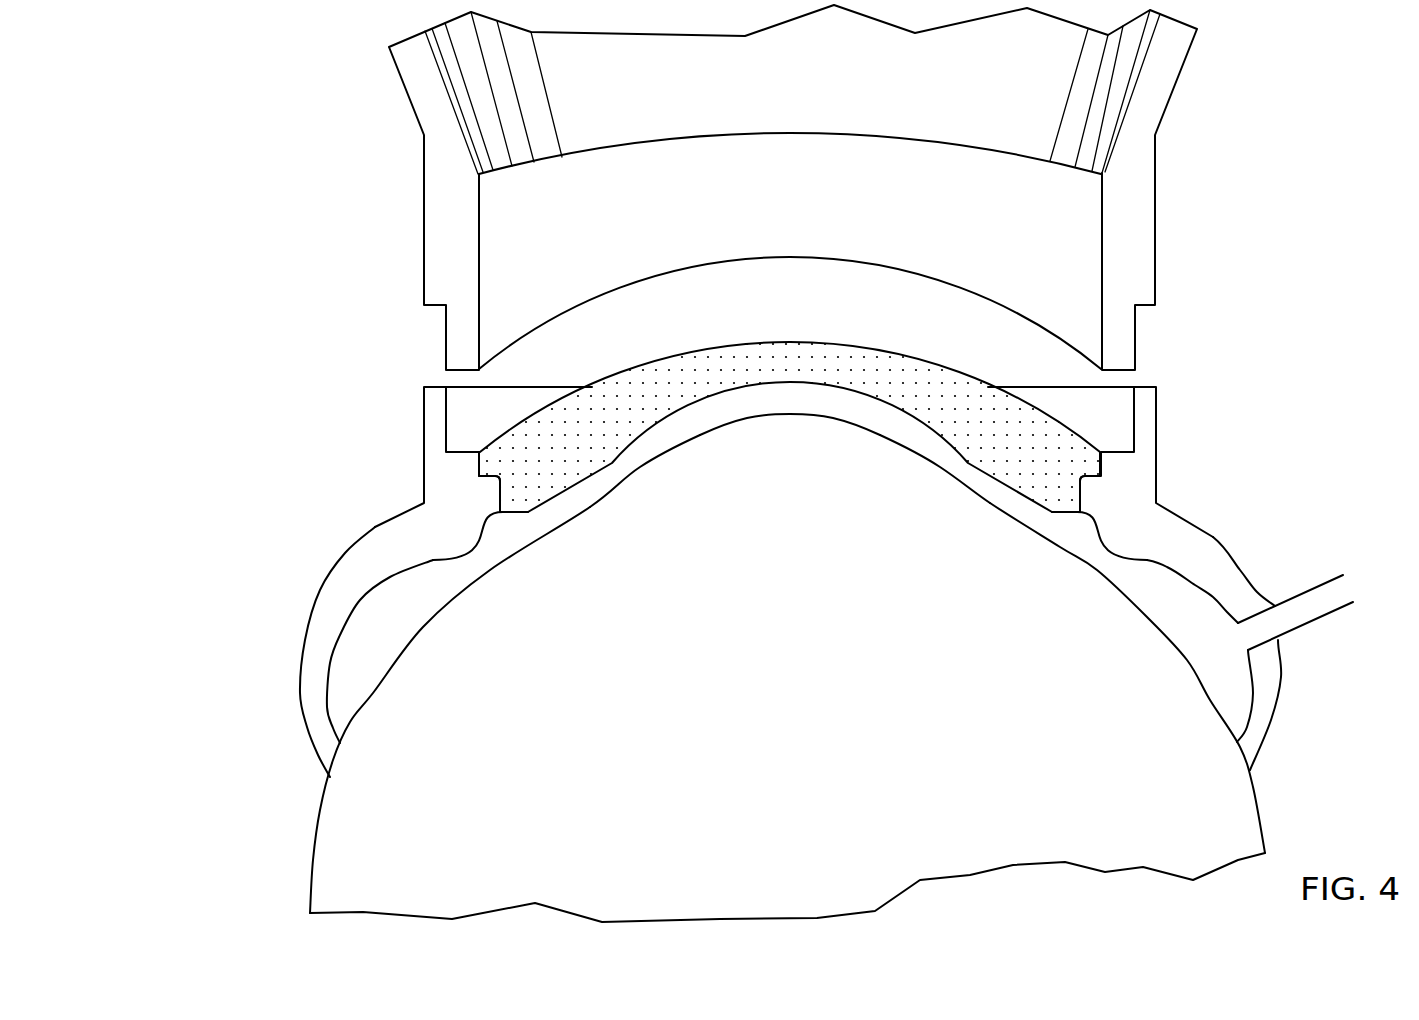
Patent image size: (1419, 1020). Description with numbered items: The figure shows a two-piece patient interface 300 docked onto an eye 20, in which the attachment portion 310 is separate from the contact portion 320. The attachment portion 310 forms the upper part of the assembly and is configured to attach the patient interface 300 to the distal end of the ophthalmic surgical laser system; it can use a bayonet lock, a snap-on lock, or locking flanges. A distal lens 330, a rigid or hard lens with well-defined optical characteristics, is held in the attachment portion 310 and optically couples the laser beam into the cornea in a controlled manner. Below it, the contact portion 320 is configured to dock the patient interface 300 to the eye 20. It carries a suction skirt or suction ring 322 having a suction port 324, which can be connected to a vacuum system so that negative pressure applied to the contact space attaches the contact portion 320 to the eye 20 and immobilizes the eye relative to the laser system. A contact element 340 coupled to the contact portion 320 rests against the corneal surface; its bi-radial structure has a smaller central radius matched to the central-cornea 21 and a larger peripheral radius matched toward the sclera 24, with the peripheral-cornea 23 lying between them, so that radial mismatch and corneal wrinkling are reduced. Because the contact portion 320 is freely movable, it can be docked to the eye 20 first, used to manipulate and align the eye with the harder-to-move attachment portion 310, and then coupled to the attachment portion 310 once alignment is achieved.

The patient interface 300 is at (323, 55).
The attachment portion 310 is at (393, 153).
The contact portion 320 is at (375, 527).
The suction skirt or suction ring 322 is at (305, 726).
The suction port 324 is at (1285, 597).
The distal lens 330 is at (1062, 215).
The contact element 340 is at (623, 396).
The eye 20 is at (942, 759).
The central-cornea 21 is at (750, 418).
The peripheral-cornea 23 is at (995, 505).
The sclera 24 is at (1093, 570).